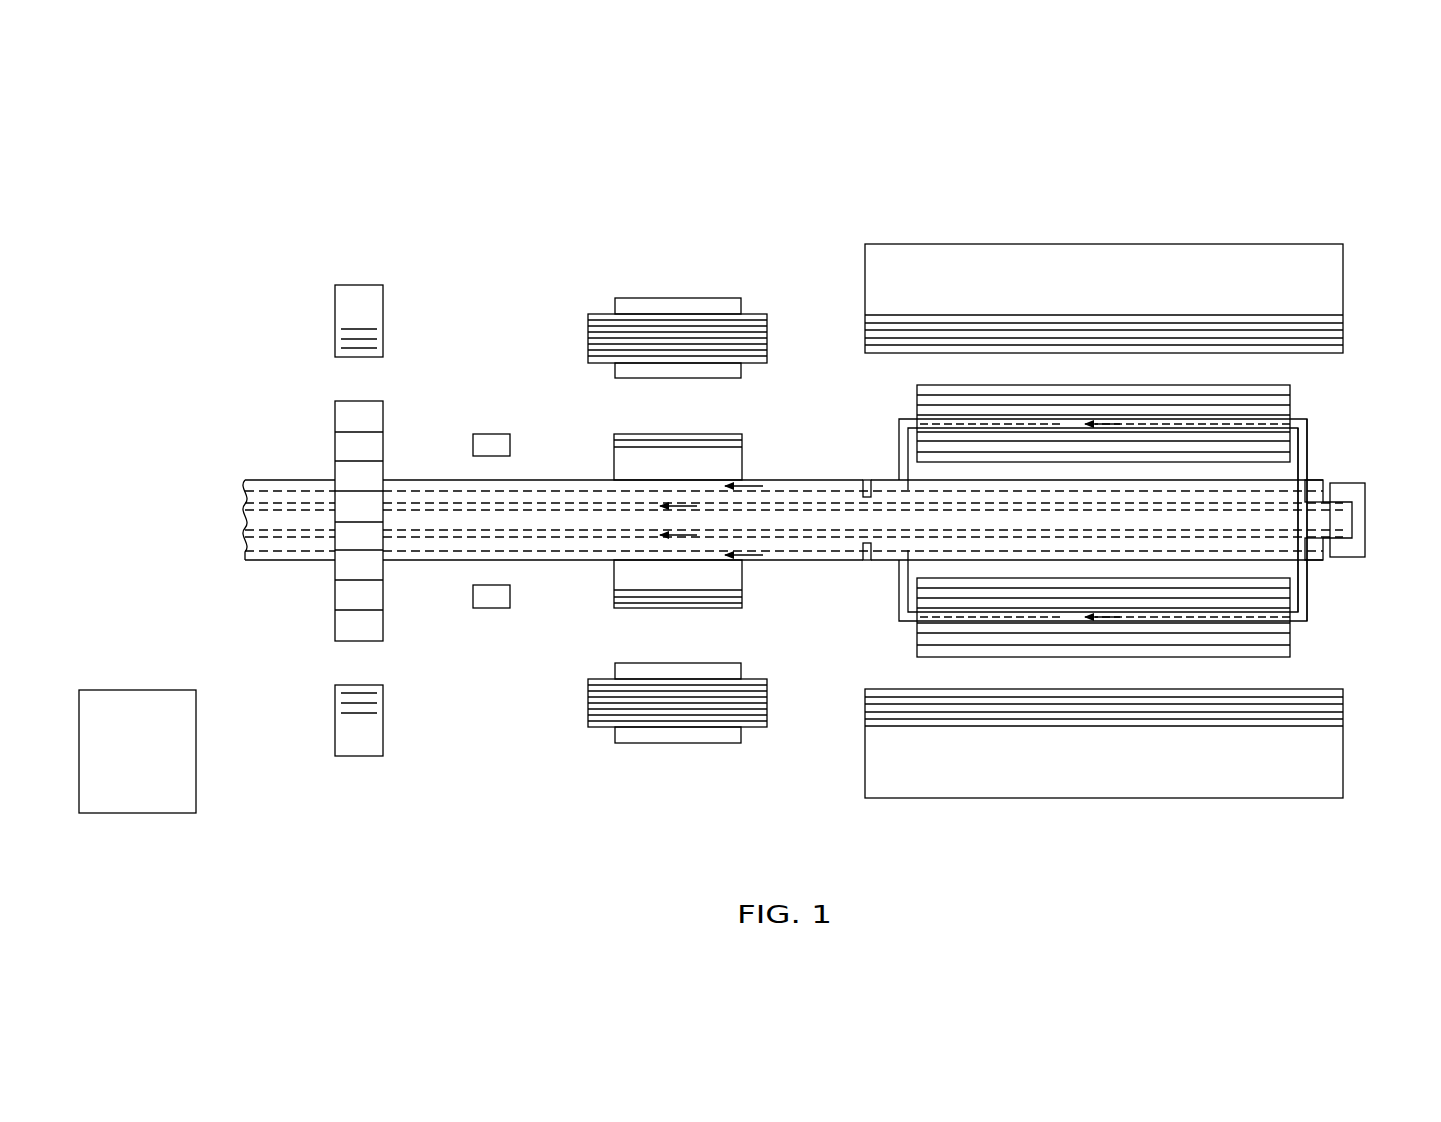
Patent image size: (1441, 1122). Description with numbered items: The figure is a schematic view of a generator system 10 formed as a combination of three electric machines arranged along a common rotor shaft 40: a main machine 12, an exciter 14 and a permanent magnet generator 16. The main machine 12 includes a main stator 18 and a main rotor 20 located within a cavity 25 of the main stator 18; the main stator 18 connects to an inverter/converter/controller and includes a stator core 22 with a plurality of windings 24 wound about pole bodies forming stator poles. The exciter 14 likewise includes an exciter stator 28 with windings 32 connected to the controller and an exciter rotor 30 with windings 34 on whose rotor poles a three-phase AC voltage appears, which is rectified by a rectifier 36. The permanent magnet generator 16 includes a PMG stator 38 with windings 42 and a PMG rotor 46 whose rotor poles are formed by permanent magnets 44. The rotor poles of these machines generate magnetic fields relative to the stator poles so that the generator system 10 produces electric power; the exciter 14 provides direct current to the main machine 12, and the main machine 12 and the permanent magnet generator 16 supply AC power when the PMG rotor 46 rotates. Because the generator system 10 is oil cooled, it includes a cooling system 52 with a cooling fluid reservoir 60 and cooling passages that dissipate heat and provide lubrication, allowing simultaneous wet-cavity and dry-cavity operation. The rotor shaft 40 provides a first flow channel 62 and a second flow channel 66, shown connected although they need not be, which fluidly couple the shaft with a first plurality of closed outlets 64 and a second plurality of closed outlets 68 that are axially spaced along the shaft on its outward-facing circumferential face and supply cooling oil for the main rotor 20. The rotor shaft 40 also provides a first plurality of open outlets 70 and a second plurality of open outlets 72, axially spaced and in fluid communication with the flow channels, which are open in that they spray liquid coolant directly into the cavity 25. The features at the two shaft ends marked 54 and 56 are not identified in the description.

The generator system 10 is at (760, 441).
The main machine 12 is at (1127, 434).
The exciter 14 is at (657, 466).
The permanent magnet generator 16 is at (319, 522).
The main stator 18 is at (1132, 465).
The main rotor 20 is at (1127, 499).
The stator core 22 is at (1343, 280).
The windings 24 is at (1105, 315).
The cavity 25 is at (1051, 501).
The exciter stator 28 is at (686, 305).
The exciter rotor 30 is at (707, 588).
The windings 32 is at (748, 365).
The windings 34 is at (675, 608).
The rectifier 36 is at (490, 608).
The PMG stator 38 is at (360, 285).
The rotor shaft 40 is at (790, 480).
The windings 42 is at (355, 757).
The permanent magnets 44 is at (335, 600).
The PMG rotor 46 is at (319, 497).
The cooling system 52 is at (597, 442).
The first shaft end 54 is at (243, 500).
The second shaft end 56 is at (243, 540).
The cooling fluid reservoir 60 is at (137, 690).
The first flow channel 62 is at (447, 500).
The first plurality of closed outlets 64 is at (899, 476).
The second flow channel 66 is at (447, 542).
The second plurality of closed outlets 68 is at (1310, 480).
The first plurality of open outlets 70 is at (865, 480).
The second plurality of open outlets 72 is at (1350, 483).